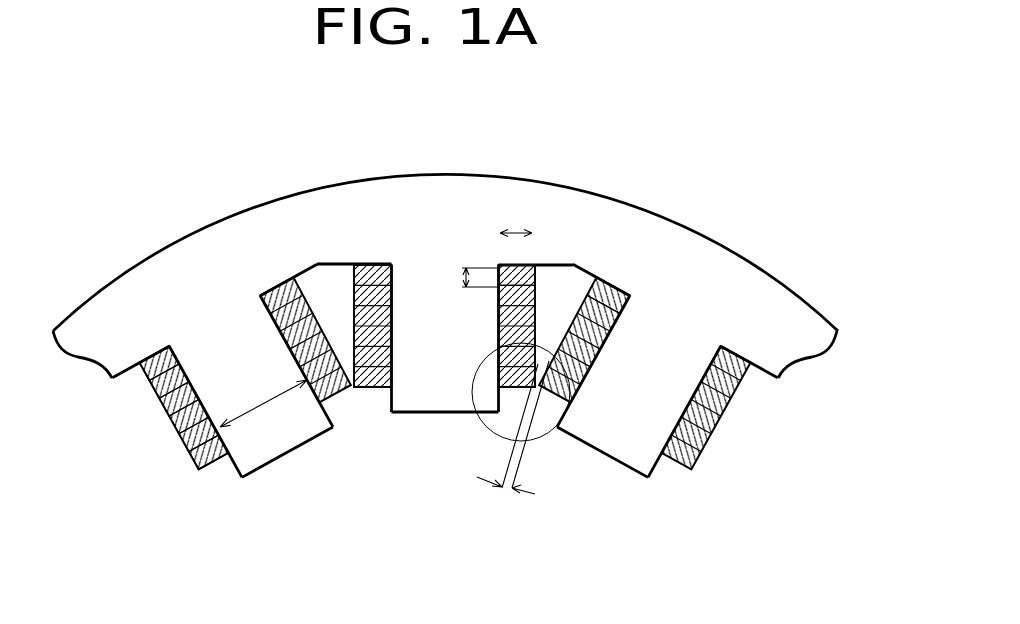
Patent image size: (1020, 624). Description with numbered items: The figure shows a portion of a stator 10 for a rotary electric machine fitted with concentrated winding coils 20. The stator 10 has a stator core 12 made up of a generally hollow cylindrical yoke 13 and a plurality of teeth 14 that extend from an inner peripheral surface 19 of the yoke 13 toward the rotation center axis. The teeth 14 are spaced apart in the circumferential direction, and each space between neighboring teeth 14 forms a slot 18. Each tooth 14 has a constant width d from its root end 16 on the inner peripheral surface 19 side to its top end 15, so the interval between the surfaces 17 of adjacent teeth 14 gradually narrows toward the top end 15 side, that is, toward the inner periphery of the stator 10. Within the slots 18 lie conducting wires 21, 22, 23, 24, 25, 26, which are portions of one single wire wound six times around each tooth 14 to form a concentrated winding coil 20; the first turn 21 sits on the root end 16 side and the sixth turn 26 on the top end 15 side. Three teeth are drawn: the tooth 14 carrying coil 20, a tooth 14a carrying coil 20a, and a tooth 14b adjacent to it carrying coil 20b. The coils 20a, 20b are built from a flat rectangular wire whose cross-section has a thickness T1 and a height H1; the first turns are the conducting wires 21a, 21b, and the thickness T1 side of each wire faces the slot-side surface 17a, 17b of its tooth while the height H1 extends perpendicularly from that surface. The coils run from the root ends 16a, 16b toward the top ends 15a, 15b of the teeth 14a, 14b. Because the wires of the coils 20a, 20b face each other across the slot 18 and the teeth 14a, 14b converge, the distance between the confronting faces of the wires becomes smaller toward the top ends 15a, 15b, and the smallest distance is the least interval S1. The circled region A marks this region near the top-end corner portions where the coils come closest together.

The stator 10 is at (712, 188).
The stator core 12 is at (238, 189).
The yoke 13 is at (320, 233).
The tooth 14 is at (262, 452).
The tooth 14a is at (413, 398).
The tooth 14b is at (646, 458).
The top end 15 is at (293, 457).
The top end 15a is at (437, 413).
The top end 15b is at (620, 465).
The root end 16 is at (218, 330).
The root end 16a is at (407, 260).
The root end 16b is at (670, 318).
The surface 17 is at (250, 460).
The surface 17a is at (503, 420).
The surface 17b is at (545, 430).
The slot 18 is at (330, 287).
The inner peripheral surface 19 is at (305, 278).
The concentrated winding coil 20 is at (150, 558).
The concentrated winding coil 20a is at (547, 264).
The concentrated winding coil 20b is at (587, 283).
The conducting wire 21 is at (150, 375).
The conducting wire 21a is at (497, 263).
The conducting wire 21b is at (607, 293).
The conducting wire 22 is at (158, 396).
The conducting wire 23 is at (163, 418).
The conducting wire 24 is at (168, 433).
The conducting wire 25 is at (177, 450).
The conducting wire 26 is at (197, 470).
The width d is at (263, 399).
The height H1 is at (516, 217).
The thickness T1 is at (462, 282).
The least interval S1 is at (513, 451).
The region A is at (503, 437).